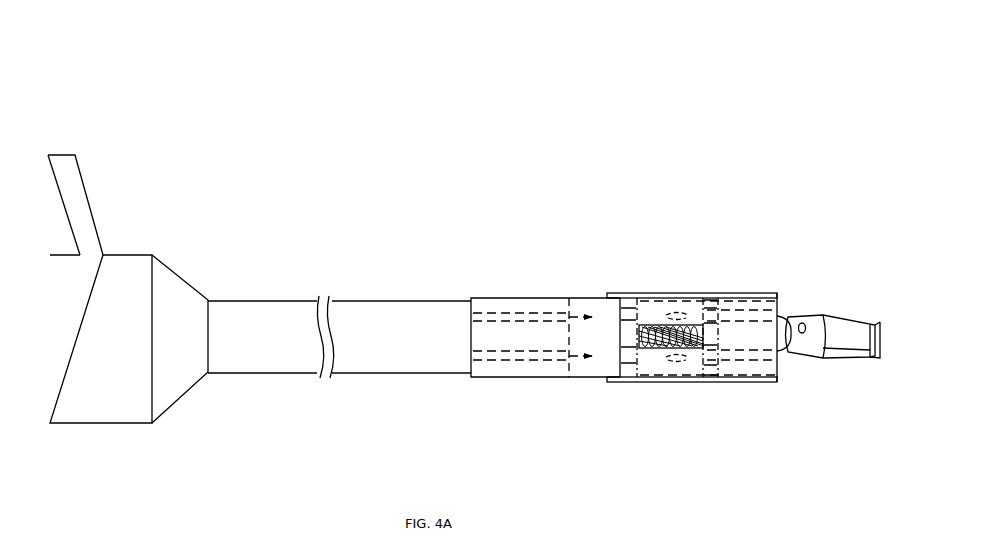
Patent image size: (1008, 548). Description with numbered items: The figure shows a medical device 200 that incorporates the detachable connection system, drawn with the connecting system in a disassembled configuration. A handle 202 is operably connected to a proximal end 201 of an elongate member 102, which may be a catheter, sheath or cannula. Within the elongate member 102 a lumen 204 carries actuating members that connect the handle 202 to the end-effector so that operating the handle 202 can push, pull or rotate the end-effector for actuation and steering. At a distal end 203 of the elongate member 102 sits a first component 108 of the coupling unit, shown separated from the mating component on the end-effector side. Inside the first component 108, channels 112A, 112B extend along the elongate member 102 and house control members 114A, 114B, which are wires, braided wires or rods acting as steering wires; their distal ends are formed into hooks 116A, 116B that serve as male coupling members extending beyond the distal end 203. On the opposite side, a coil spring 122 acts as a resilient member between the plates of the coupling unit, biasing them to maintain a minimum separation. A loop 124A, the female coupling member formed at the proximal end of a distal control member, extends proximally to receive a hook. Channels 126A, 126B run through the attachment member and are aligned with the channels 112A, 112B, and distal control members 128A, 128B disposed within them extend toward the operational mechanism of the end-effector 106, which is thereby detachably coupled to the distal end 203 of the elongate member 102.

The medical device 200 is at (175, 66).
The handle 202 is at (67, 154).
The proximal end 201 is at (222, 300).
The elongate member 102 is at (305, 297).
The lumen 204 is at (397, 322).
The distal end 203 is at (420, 373).
The first component 108 is at (500, 226).
The channel 112A is at (500, 309).
The channel 112B is at (482, 359).
The control member 114A is at (527, 309).
The control member 114B is at (532, 359).
The hook 116A is at (585, 309).
The hook 116B is at (587, 359).
The coil spring 122 is at (652, 321).
The loop 124A is at (680, 307).
The distal control member 128A is at (728, 309).
The channel 126A is at (743, 309).
The channel 126B is at (750, 359).
The distal control member 128B is at (729, 359).
The end-effector 106 is at (820, 296).